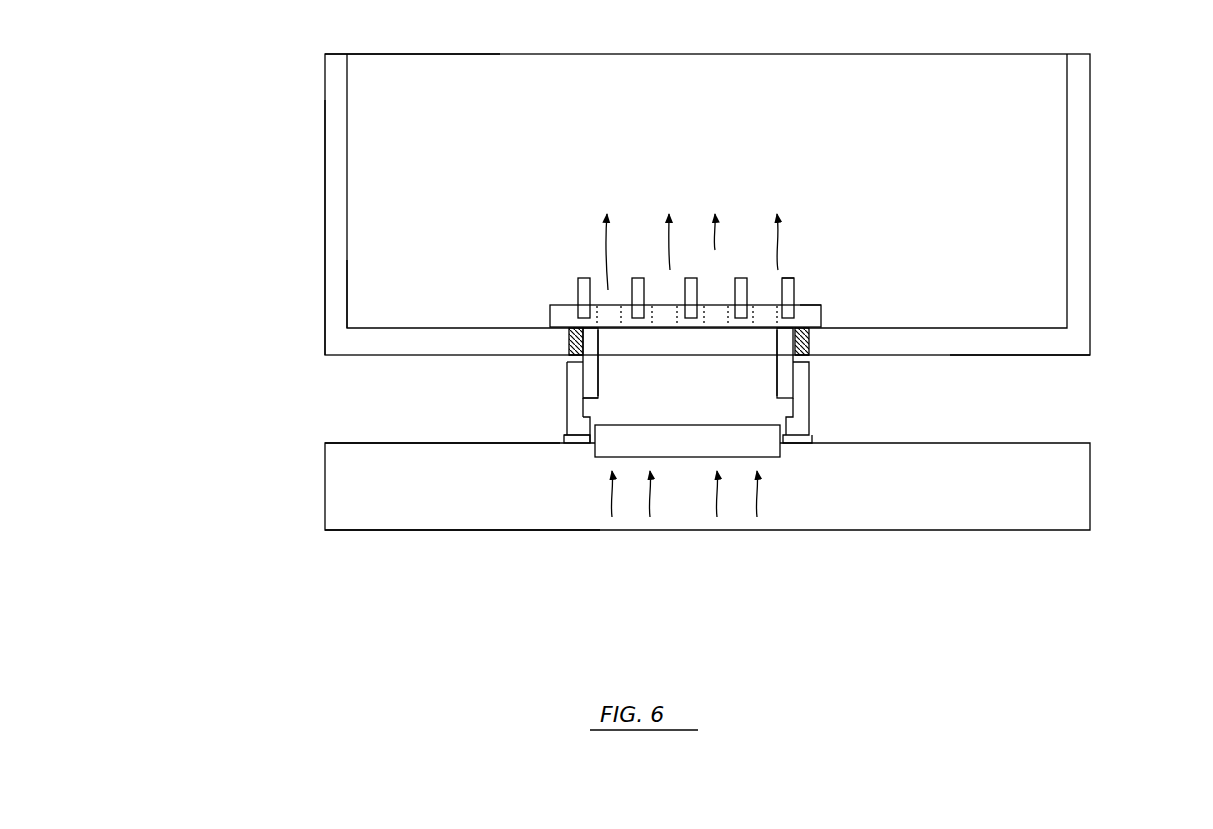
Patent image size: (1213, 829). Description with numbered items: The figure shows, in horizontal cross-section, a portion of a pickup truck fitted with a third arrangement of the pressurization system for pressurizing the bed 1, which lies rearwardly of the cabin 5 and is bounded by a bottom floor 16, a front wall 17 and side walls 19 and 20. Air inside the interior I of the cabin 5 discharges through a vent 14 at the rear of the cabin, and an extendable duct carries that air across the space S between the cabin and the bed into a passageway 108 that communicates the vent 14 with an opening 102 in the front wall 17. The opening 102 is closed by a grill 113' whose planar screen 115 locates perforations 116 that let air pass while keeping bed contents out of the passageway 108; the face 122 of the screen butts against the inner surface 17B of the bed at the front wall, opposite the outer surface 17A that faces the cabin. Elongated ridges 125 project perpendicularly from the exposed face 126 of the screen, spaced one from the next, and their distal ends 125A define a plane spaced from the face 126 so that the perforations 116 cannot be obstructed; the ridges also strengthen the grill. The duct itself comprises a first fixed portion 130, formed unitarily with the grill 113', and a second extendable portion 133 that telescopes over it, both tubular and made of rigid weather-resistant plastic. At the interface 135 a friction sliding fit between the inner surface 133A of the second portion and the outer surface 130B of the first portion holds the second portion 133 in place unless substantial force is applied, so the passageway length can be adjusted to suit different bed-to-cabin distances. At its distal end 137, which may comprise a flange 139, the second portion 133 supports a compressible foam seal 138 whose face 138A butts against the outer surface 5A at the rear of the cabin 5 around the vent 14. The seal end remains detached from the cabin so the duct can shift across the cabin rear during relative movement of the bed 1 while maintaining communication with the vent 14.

The bed 1 is at (322, 99).
The cabin 5 is at (324, 500).
The outer surface of the rear of the cabin 5A is at (337, 433).
The vent 14 is at (690, 448).
The bottom floor 16 is at (1033, 140).
The front wall 17 is at (1037, 344).
The outer surface of the bed at the front wall 17A is at (366, 359).
The inner surface of the bed at the front wall 17B is at (368, 325).
The side wall 19 is at (1082, 205).
The side wall 20 is at (336, 208).
The opening 102 is at (566, 343).
The passageway 108 is at (743, 380).
The grill 113' is at (647, 273).
The screen 115 is at (824, 315).
The perforations 116 is at (767, 300).
The face of the screen 122 is at (813, 330).
The elongated ridges 125 is at (790, 294).
The distal ends of the ridges 125A is at (784, 279).
The exposed face of the grill screen 126 is at (813, 306).
The first fixed portion 130 is at (590, 361).
The outer surface of the first portion 130B is at (567, 357).
The second extendable portion 133 is at (574, 405).
The inner surface of the second portion 133A is at (590, 407).
The interface 135 is at (784, 408).
The distal end 137 is at (563, 429).
The compressible seal 138 is at (540, 444).
The face of the seal 138A is at (575, 446).
The flange 139 is at (590, 427).
The space S is at (338, 401).
The interior of the cabin I is at (392, 515).